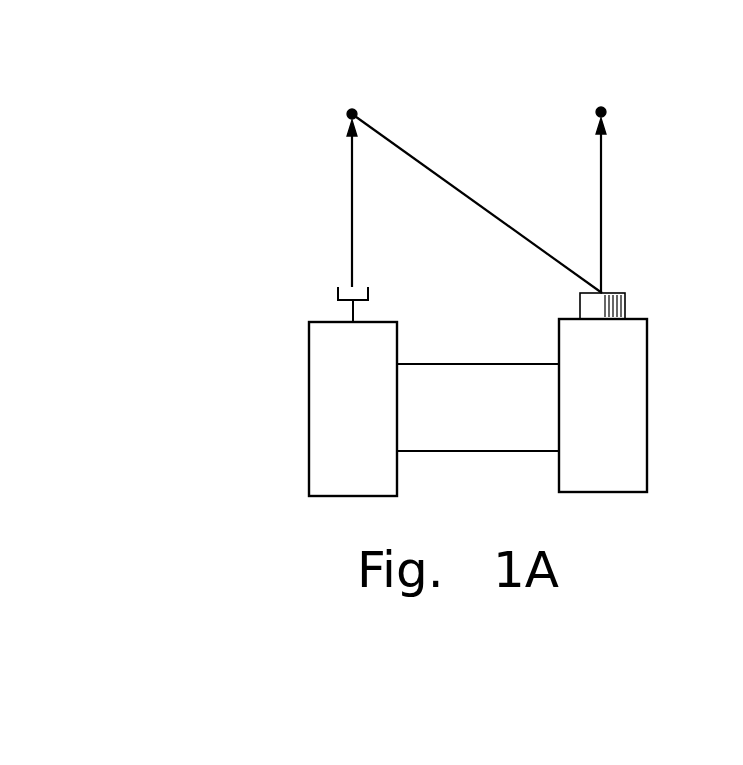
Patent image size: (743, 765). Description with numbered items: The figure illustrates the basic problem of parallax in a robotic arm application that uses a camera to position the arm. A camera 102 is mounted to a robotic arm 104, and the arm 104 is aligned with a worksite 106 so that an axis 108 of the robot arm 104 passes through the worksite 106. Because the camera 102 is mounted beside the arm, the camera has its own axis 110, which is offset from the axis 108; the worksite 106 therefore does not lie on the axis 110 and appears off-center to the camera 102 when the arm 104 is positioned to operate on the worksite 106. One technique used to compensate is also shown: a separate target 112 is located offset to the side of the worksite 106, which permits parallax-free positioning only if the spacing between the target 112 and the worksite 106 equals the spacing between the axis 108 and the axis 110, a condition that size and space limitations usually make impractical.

The camera 102 is at (648, 407).
The robotic arm 104 is at (309, 393).
The worksite 106 is at (357, 111).
The axis of robot arm 108 is at (352, 201).
The axis of camera 110 is at (602, 215).
The target 112 is at (606, 110).